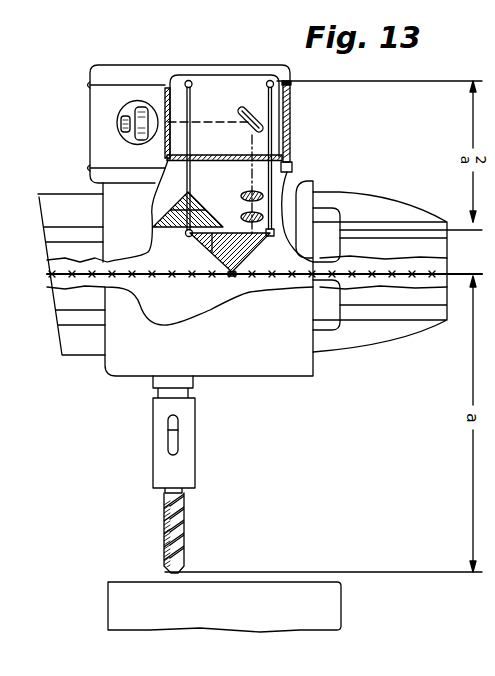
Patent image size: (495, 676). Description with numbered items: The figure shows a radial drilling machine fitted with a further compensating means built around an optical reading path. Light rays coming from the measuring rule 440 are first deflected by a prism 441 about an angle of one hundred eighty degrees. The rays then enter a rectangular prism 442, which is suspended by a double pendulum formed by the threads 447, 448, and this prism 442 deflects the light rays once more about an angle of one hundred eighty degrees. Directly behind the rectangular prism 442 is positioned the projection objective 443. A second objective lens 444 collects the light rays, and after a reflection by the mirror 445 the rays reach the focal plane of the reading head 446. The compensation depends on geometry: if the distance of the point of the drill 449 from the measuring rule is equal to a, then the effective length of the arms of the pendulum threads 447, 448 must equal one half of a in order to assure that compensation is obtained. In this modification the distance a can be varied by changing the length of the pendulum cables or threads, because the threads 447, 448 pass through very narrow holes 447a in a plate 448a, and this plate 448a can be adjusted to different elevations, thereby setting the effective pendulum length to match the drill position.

The measuring rule 440 is at (172, 228).
The prism 441 is at (175, 211).
The rectangular prism 442 is at (246, 259).
The projection objective 443 is at (263, 216).
The second objective lens 444 is at (263, 194).
The mirror 445 is at (249, 108).
The reading head 446 is at (117, 123).
The pendulum thread 447 is at (190, 146).
The narrow holes 447a is at (192, 161).
The pendulum thread 448 is at (291, 141).
The plate 448a is at (245, 157).
The drill 449 is at (176, 527).